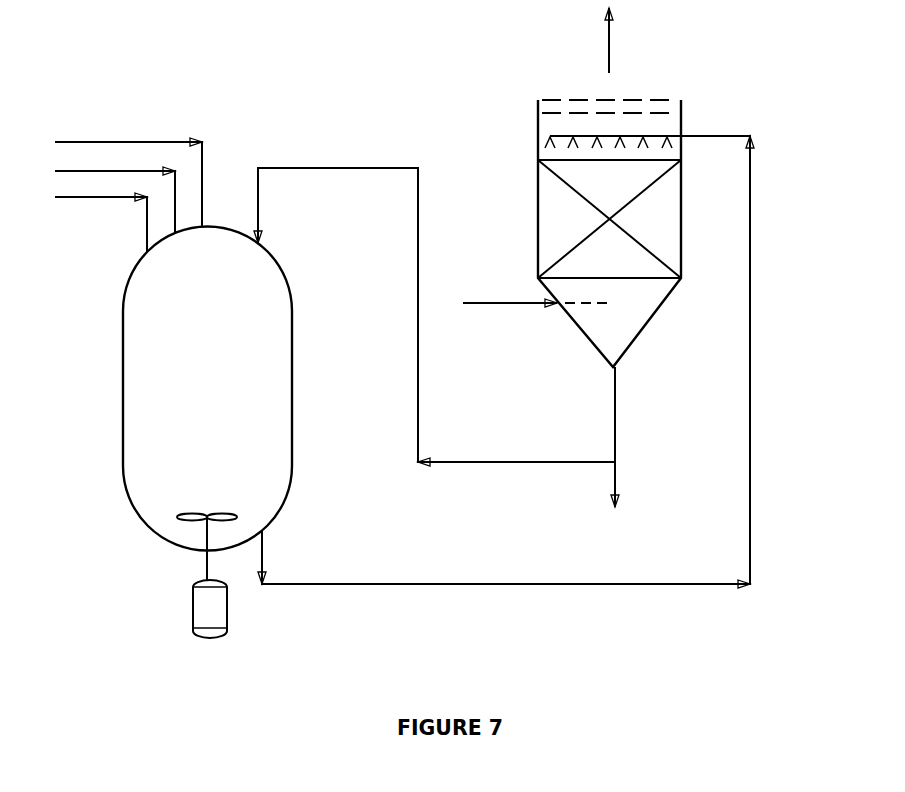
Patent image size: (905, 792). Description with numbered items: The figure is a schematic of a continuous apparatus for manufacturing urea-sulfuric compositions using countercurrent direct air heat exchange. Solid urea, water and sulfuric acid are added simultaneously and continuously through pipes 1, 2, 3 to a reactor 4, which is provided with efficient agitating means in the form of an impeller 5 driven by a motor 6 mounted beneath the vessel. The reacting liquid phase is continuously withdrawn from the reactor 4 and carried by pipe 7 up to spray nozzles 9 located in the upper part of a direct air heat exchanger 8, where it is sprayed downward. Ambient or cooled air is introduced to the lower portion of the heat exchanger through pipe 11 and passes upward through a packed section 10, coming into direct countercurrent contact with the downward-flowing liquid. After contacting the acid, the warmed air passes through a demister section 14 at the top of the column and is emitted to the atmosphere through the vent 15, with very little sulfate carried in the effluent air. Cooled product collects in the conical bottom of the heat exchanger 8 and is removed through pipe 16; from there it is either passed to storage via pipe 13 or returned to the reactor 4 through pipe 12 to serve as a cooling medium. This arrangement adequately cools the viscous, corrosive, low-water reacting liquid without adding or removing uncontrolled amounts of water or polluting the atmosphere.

The pipe 1 is at (119, 179).
The pipe 2 is at (105, 197).
The pipe 3 is at (91, 219).
The reactor 4 is at (123, 346).
The impeller 5 is at (197, 512).
The motor 6 is at (193, 620).
The pipe 7 is at (751, 318).
The direct air heat exchanger 8 is at (537, 136).
The spray nozzles 9 is at (620, 137).
The packed section 10 is at (538, 182).
The pipe 11 is at (515, 305).
The pipe 12 is at (322, 166).
The pipe 13 is at (617, 485).
The demister section 14 is at (665, 108).
The vent 15 is at (610, 58).
The pipe 16 is at (617, 418).